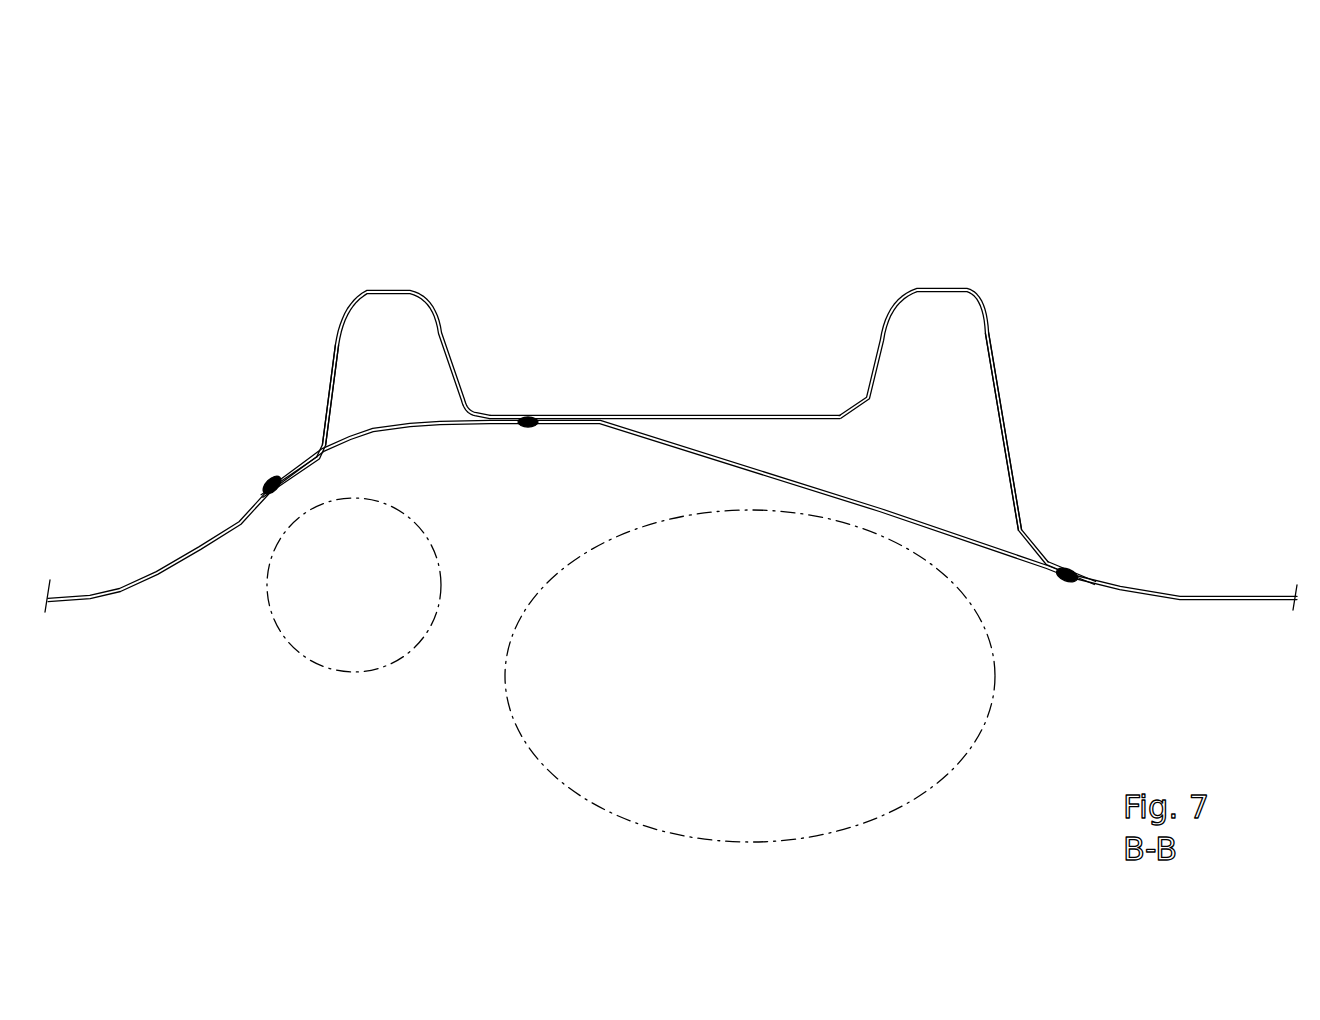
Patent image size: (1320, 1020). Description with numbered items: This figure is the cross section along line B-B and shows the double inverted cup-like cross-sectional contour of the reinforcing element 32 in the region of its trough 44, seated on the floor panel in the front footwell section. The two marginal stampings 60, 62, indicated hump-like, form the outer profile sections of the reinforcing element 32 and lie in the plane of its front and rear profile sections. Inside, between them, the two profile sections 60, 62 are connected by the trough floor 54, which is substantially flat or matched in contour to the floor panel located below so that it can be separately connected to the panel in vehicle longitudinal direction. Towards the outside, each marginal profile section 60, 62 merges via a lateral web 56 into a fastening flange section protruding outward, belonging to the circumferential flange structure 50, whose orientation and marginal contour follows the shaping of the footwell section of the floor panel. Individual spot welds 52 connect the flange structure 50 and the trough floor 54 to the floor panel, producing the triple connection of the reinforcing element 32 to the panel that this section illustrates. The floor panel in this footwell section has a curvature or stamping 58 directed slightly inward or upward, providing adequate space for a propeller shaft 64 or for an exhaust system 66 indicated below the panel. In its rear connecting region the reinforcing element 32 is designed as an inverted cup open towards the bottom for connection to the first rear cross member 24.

The first rear cross member 24 is at (158, 576).
The reinforcing element 32 is at (671, 366).
The trough 44 is at (676, 381).
The flange structure 50 is at (302, 460).
The spot welds 52 is at (272, 480).
The trough floor 54 is at (752, 414).
The lateral web 56 is at (335, 344).
The curvature or stamping 58 is at (520, 484).
The marginal stamping 60 is at (382, 289).
The marginal stamping 62 is at (947, 289).
The propeller shaft 64 is at (358, 668).
The exhaust system 66 is at (893, 798).